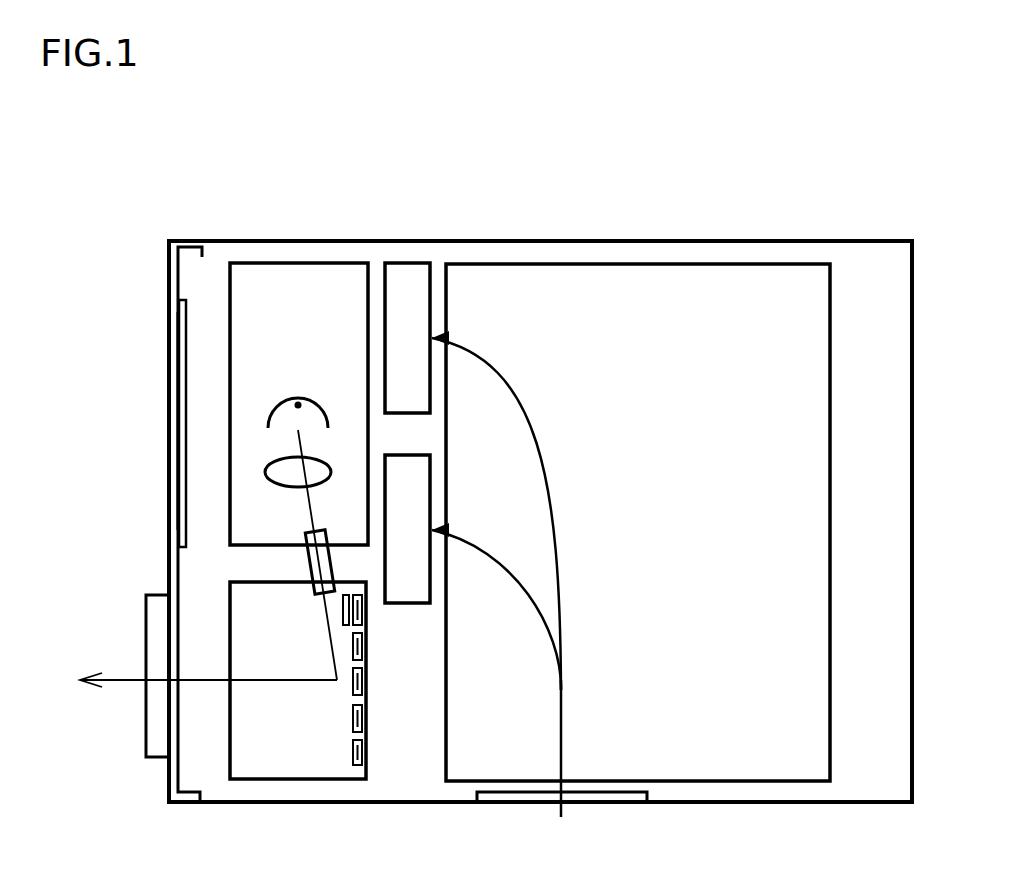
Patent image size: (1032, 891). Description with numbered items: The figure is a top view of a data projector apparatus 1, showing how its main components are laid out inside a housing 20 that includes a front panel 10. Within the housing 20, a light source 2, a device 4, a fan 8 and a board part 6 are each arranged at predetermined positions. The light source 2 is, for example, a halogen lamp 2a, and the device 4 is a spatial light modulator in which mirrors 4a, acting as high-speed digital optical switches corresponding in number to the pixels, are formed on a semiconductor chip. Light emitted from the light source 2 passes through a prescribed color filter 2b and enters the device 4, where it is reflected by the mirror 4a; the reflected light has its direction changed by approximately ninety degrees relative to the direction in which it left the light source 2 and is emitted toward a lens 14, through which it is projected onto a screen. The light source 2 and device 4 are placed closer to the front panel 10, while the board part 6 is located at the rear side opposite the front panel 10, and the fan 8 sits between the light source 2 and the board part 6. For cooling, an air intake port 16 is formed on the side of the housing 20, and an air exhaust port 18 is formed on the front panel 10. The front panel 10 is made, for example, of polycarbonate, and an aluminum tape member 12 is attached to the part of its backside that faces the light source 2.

The data projector apparatus 1 is at (522, 229).
The front panel 10 is at (172, 256).
The aluminum tape member 12 is at (185, 348).
The lens 14 is at (157, 720).
The air intake port 16 is at (647, 820).
The air exhaust port 18 is at (155, 308).
The housing 20 is at (220, 805).
The light source 2 is at (255, 313).
The halogen lamp 2a is at (298, 384).
The color filter 2b is at (320, 468).
The device 4 is at (270, 732).
The mirrors 4a is at (350, 712).
The board part 6 is at (760, 715).
The fan 8 is at (407, 337).